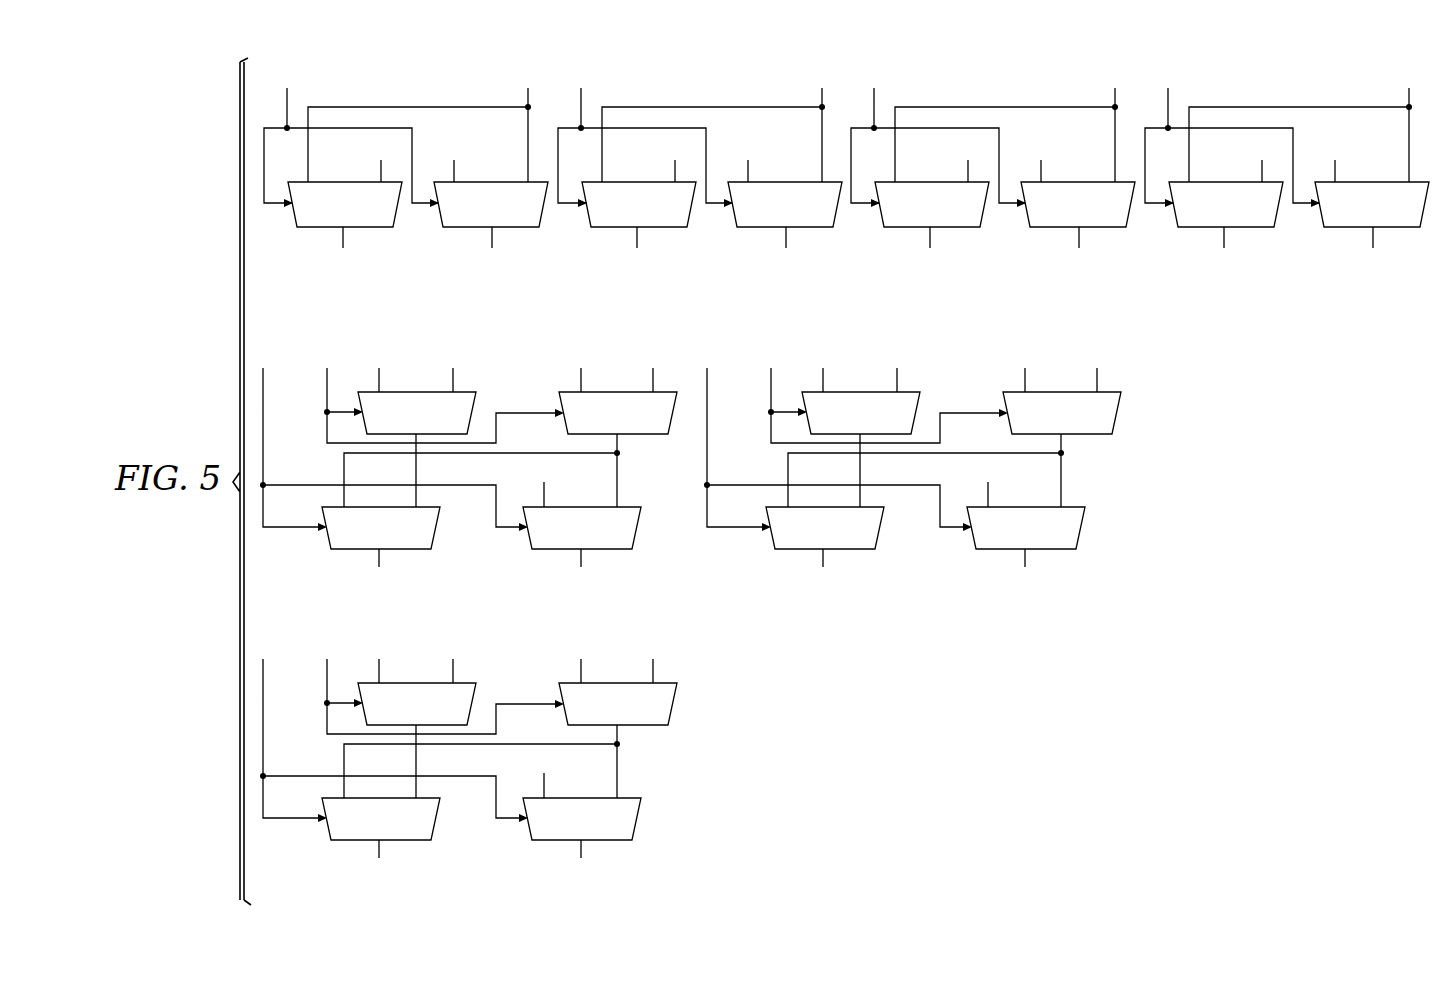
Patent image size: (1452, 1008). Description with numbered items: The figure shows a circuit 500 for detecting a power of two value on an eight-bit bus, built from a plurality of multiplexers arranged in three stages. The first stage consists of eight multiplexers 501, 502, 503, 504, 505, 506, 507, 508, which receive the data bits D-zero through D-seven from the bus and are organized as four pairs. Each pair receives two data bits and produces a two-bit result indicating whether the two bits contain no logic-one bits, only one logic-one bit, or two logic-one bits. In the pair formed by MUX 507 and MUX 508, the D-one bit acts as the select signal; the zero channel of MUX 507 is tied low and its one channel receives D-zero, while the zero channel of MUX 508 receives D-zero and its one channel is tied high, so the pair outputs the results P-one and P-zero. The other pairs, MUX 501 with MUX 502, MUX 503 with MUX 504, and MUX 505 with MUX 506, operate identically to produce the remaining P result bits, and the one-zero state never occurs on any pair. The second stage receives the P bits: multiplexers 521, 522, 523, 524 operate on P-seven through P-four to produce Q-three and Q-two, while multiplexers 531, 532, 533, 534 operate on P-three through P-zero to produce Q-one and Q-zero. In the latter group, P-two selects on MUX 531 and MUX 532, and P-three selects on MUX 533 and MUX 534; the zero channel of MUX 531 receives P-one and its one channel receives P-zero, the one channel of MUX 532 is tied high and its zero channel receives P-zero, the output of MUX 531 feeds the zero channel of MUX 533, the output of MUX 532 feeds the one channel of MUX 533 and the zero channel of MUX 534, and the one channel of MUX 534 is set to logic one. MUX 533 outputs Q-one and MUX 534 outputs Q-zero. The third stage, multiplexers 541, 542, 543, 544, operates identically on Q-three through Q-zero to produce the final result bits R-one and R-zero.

The circuit 500 is at (1090, 661).
The multiplexer 501 is at (312, 233).
The multiplexer 502 is at (457, 233).
The multiplexer 503 is at (606, 233).
The multiplexer 504 is at (751, 233).
The multiplexer 505 is at (964, 233).
The multiplexer 506 is at (1114, 233).
The multiplexer 507 is at (1259, 233).
The multiplexer 508 is at (1408, 233).
The multiplexer 521 is at (468, 388).
The multiplexer 522 is at (658, 442).
The multiplexer 523 is at (340, 556).
The multiplexer 524 is at (622, 556).
The multiplexer 531 is at (912, 388).
The multiplexer 532 is at (1102, 442).
The multiplexer 533 is at (862, 557).
The multiplexer 534 is at (1062, 557).
The multiplexer 541 is at (468, 679).
The multiplexer 542 is at (658, 733).
The multiplexer 543 is at (340, 847).
The multiplexer 544 is at (622, 847).